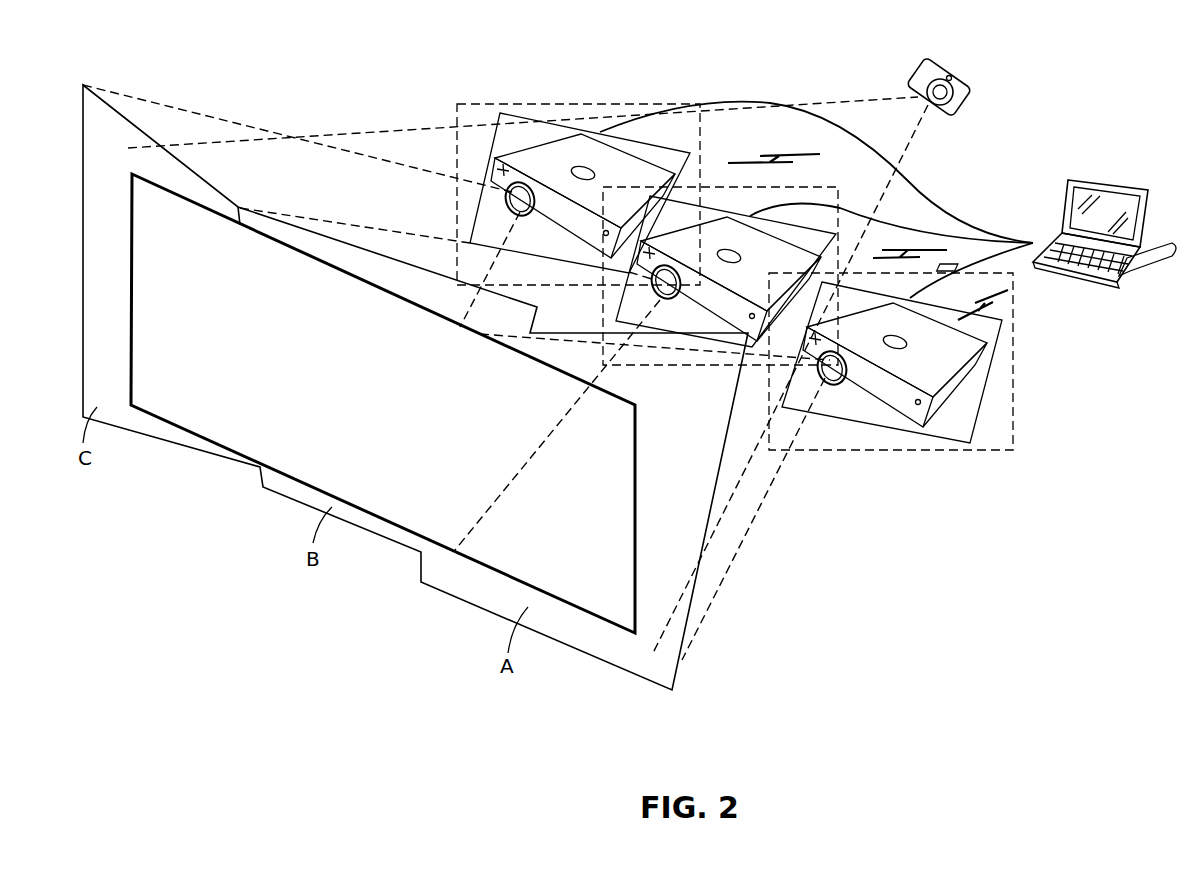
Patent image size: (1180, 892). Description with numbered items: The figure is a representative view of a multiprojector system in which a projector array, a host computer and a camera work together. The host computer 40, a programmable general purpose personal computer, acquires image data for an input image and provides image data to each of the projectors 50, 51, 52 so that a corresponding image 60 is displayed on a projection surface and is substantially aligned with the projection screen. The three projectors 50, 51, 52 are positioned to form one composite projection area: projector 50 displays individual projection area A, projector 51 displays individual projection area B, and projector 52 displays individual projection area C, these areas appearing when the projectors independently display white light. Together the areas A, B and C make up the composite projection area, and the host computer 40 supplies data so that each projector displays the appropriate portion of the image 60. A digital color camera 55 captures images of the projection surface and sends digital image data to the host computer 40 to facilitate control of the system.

The host computer 40 is at (1150, 197).
The projector 50 is at (891, 361).
The projector 51 is at (720, 276).
The projector 52 is at (578, 194).
The digital color camera 55 is at (920, 63).
The image 60 is at (155, 390).